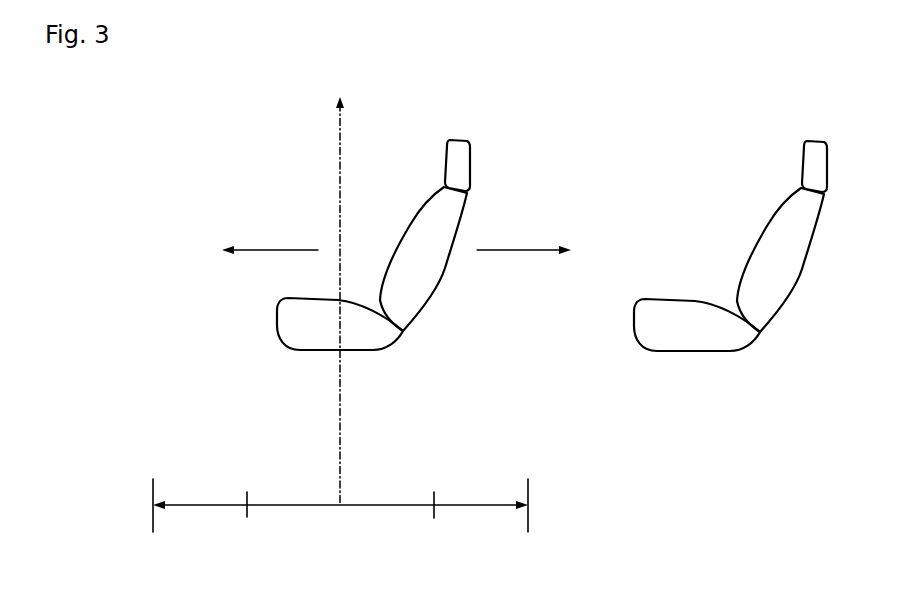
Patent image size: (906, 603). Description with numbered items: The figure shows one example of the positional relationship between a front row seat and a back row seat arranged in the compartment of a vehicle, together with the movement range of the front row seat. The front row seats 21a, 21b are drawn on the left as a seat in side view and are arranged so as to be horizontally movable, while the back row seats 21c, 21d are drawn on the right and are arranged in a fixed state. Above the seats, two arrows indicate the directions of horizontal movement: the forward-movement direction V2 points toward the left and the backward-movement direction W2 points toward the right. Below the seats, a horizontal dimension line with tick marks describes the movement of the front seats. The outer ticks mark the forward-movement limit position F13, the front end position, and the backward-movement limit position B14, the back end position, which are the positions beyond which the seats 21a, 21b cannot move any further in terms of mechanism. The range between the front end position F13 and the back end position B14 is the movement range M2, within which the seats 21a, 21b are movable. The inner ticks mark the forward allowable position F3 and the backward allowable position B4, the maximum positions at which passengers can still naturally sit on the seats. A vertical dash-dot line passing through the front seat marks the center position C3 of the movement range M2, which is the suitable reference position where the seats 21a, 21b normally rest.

The seat 21a is at (281, 249).
The seat 21b is at (305, 249).
The seat 21c is at (640, 250).
The seat 21d is at (663, 250).
The forward-movement direction V2 is at (253, 251).
The backward-movement direction W2 is at (541, 250).
The center position C3 is at (340, 504).
The movement range M2 is at (527, 511).
The forward-movement limit position F13 is at (152, 506).
The forward-movement allowable position F3 is at (247, 507).
The backward-movement allowable position B4 is at (434, 507).
The backward-movement limit position B14 is at (528, 507).